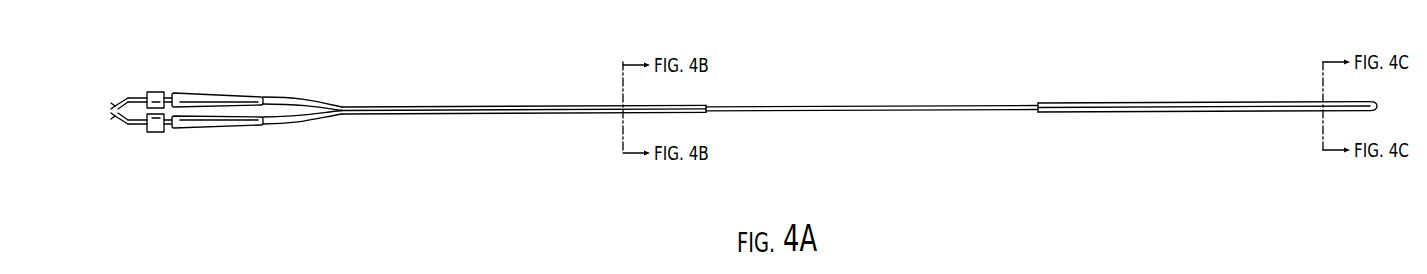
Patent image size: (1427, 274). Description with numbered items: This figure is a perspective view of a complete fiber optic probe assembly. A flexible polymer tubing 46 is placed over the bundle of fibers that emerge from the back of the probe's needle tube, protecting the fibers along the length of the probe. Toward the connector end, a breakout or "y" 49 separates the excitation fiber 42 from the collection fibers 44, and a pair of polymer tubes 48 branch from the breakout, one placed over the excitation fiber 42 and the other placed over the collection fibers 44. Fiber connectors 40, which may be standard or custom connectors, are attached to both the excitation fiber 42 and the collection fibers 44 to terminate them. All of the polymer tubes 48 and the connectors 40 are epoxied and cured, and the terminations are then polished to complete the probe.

The fiber connectors 40 is at (168, 90).
The excitation fiber 42 is at (223, 90).
The collection fibers 44 is at (214, 130).
The flexible polymer tubing 46 is at (888, 101).
The polymer tubes 48 is at (306, 113).
The breakout 49 is at (363, 118).